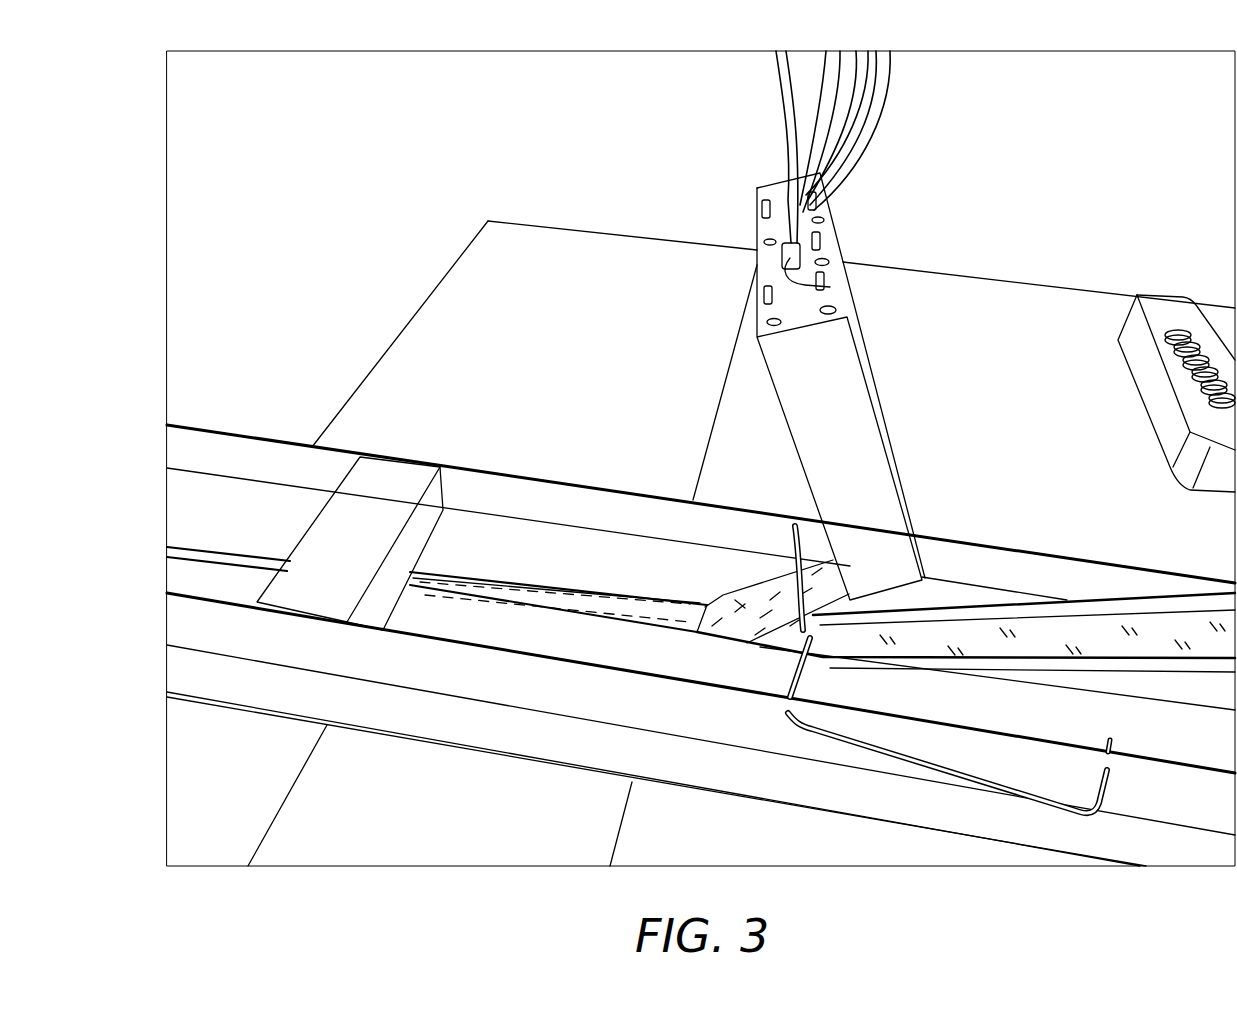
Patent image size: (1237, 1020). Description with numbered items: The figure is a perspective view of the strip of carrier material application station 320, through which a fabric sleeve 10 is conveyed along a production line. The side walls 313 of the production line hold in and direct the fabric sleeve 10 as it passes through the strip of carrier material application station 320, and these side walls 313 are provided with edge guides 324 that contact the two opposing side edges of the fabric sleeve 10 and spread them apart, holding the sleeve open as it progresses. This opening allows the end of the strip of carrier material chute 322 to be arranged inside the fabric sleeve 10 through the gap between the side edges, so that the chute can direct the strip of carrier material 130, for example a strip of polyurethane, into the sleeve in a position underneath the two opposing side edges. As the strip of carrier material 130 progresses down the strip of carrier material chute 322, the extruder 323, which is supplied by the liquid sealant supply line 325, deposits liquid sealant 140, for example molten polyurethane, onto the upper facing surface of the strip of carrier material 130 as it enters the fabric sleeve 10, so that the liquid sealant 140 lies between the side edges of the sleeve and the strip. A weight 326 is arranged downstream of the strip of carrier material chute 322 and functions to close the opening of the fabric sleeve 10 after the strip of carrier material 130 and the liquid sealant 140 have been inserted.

The fabric sleeve 10 is at (612, 560).
The strip of carrier material 130 is at (1022, 632).
The liquid sealant 140 is at (760, 585).
The side walls 313 is at (487, 678).
The strip of carrier material application station 320 is at (650, 389).
The strip of carrier material chute 322 is at (1113, 608).
The extruder 323 is at (857, 417).
The edge guides 324 is at (763, 587).
The liquid sealant supply line 325 is at (775, 259).
The weight 326 is at (391, 480).